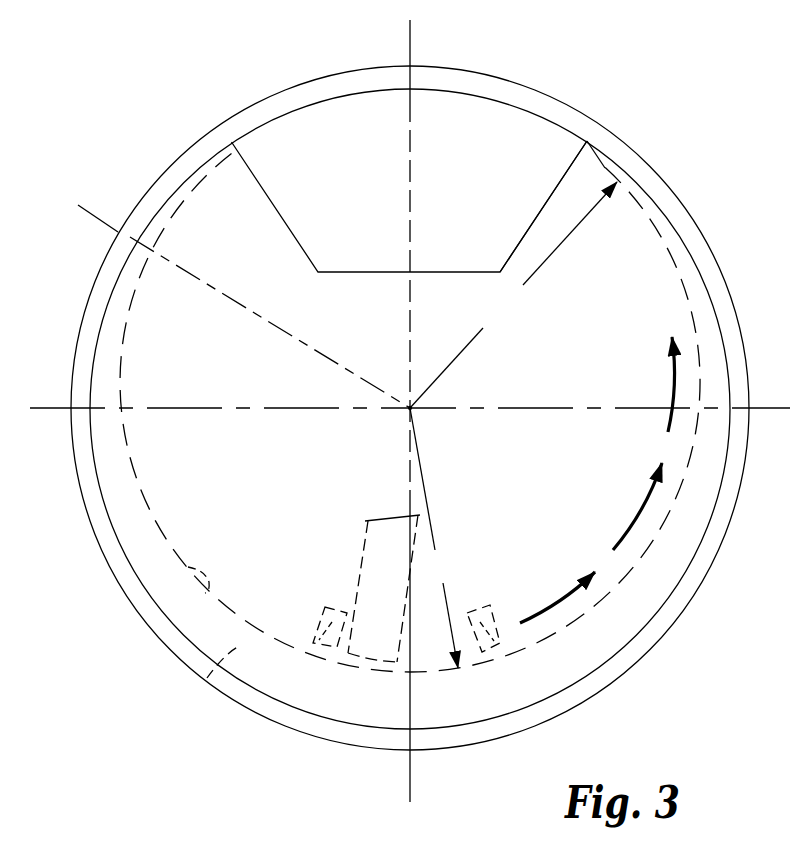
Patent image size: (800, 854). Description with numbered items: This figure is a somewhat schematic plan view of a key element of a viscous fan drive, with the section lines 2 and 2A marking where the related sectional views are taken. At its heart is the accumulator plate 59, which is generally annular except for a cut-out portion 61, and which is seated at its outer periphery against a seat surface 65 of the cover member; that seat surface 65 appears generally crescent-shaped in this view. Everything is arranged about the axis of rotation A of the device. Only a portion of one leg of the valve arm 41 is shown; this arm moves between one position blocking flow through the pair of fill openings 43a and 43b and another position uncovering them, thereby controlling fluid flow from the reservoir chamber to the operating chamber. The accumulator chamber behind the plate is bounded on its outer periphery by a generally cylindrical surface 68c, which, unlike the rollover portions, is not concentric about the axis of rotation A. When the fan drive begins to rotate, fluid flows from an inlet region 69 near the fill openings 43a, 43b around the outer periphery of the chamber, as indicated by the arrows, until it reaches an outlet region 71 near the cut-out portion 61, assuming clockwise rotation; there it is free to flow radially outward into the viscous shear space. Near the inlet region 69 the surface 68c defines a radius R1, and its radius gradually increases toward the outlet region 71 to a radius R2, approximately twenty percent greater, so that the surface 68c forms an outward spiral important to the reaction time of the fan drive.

The accumulator plate 59 is at (657, 193).
The cut-out portion 61 is at (488, 137).
The outlet region 71 is at (562, 173).
The valve arm 41 is at (372, 558).
The fill opening 43a is at (315, 648).
The fill opening 43b is at (500, 643).
The seat surface 65 is at (207, 678).
The cylindrical surface 68c is at (188, 568).
The inlet region 69 is at (505, 604).
The axis of rotation A is at (406, 404).
The radius R1 is at (434, 538).
The radius R2 is at (513, 295).
The section line 2 is at (82, 222).
The section line 2A is at (409, 28).